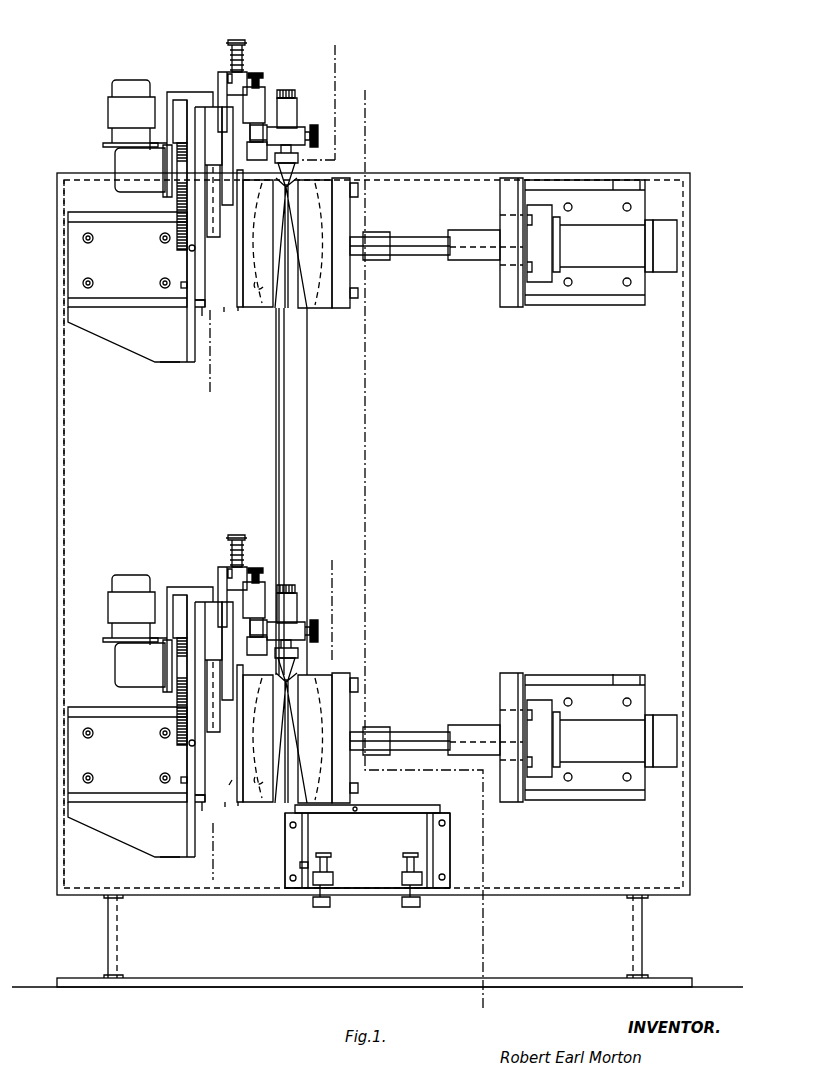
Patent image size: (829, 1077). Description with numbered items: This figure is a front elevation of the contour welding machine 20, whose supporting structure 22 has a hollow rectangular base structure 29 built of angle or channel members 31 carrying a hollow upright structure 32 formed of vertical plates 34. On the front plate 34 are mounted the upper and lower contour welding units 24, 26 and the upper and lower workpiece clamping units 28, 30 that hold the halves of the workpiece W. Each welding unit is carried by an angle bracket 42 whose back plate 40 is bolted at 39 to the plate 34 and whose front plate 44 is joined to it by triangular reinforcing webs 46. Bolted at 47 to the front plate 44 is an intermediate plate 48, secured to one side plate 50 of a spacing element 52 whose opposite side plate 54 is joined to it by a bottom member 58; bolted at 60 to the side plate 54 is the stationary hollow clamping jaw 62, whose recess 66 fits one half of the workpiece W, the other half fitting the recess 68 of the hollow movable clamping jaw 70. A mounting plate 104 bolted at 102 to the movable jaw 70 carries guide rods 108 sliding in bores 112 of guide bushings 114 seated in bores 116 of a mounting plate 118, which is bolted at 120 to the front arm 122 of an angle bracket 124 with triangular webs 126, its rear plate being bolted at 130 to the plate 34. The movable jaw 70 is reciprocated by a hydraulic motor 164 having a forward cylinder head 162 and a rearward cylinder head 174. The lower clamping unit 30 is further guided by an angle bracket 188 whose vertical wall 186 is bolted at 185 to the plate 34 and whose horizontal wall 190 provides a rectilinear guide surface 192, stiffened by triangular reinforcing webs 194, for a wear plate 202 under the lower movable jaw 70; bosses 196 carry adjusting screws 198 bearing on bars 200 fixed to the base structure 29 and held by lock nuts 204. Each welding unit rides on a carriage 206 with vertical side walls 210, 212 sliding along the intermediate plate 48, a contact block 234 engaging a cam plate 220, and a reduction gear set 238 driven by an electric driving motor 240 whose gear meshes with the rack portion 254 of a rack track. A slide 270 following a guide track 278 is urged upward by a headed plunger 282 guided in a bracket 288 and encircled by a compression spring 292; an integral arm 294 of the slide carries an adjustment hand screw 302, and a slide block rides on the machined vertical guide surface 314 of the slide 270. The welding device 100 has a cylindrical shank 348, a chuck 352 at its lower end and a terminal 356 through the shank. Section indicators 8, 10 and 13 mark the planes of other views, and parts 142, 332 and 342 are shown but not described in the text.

The section line 8- 8 is at (335, 53).
The section line 10- 10 is at (334, 580).
The section line 13- 13 is at (367, 108).
The contour welding machine 20 is at (520, 178).
The supporting structure 22 is at (691, 348).
The upper contour welding unit 24 is at (275, 80).
The lower contour welding unit 26 is at (253, 562).
The upper workpiece clamping unit 28 is at (334, 307).
The base structure 29 is at (644, 936).
The lower workpiece clamping unit 30 is at (367, 673).
The angle or channel members 31 is at (591, 970).
The upright structure 32 is at (666, 489).
The vertical plates 34 is at (60, 465).
The bolts 39 is at (95, 255).
The back plate 40 is at (72, 265).
The angle bracket 42 is at (170, 364).
The front plate 44 is at (190, 325).
The triangular reinforcing webs 46 is at (121, 222).
The bolts 47 is at (180, 281).
The intermediate plate 48 is at (195, 331).
The side plate 50 is at (203, 571).
The spacing element 52 is at (228, 323).
The opposite side plate 54 is at (239, 310).
The bottom member 58 is at (224, 815).
The bolts 60 is at (223, 769).
The stationary hollow clamping jaw 62 is at (249, 499).
The recess 66 is at (253, 537).
The recess 68 is at (315, 491).
The movable clamping jaw 70 is at (340, 203).
The welding device 100 is at (298, 163).
The bolts 102 is at (358, 185).
The mounting plate 104 is at (350, 206).
The guide rods 108 is at (440, 250).
The bores 112 is at (502, 245).
The guide bushings 114 is at (450, 230).
The bores 116 is at (500, 250).
The mounting plate 118 is at (502, 178).
The bolts 120 is at (533, 207).
The front plate or arm 122 is at (532, 188).
The angle bracket 124 is at (613, 179).
The triangular webs 126 is at (640, 181).
The bolts 130 is at (623, 210).
The collar 142 is at (380, 256).
The cylinder head 162 is at (538, 295).
The reciprocatory hydraulic motor 164 is at (587, 257).
The cylinder head 174 is at (667, 272).
The bolts 185 is at (447, 875).
The vertical wall 186 is at (363, 893).
The angle bracket 188 is at (452, 838).
The horizontal wall 190 is at (420, 811).
The rectilinear guide surface 192 is at (388, 805).
The triangular reinforcing webs 194 is at (308, 827).
The bosses 196 is at (330, 877).
The adjusting screws 198 is at (404, 866).
The bars 200 is at (320, 910).
The wear plate 202 is at (350, 807).
The lock nuts 204 is at (300, 865).
The carriage 206 is at (175, 90).
The side wall 210 is at (163, 158).
The side wall 212 is at (210, 454).
The cam plate 220 is at (188, 249).
The contact block 234 is at (180, 114).
The reduction gear set 238 is at (110, 161).
The electric driving motor 240 is at (108, 116).
The rack portion 254 is at (174, 206).
The slide 270 is at (237, 419).
The guide track 278 is at (257, 491).
The headed plunger 282 is at (233, 40).
The bracket 288 is at (225, 71).
The compression spring 292 is at (236, 52).
The integral arm 294 is at (251, 362).
The adjustment hand screw 302 is at (256, 75).
The vertical guide surface 314 is at (258, 402).
The valve block 332 is at (313, 130).
The nozzle body 342 is at (295, 126).
The cylindrical shank 348 is at (318, 602).
The chuck 352 is at (296, 483).
The terminal 356 is at (284, 90).
The workpiece W is at (307, 409).